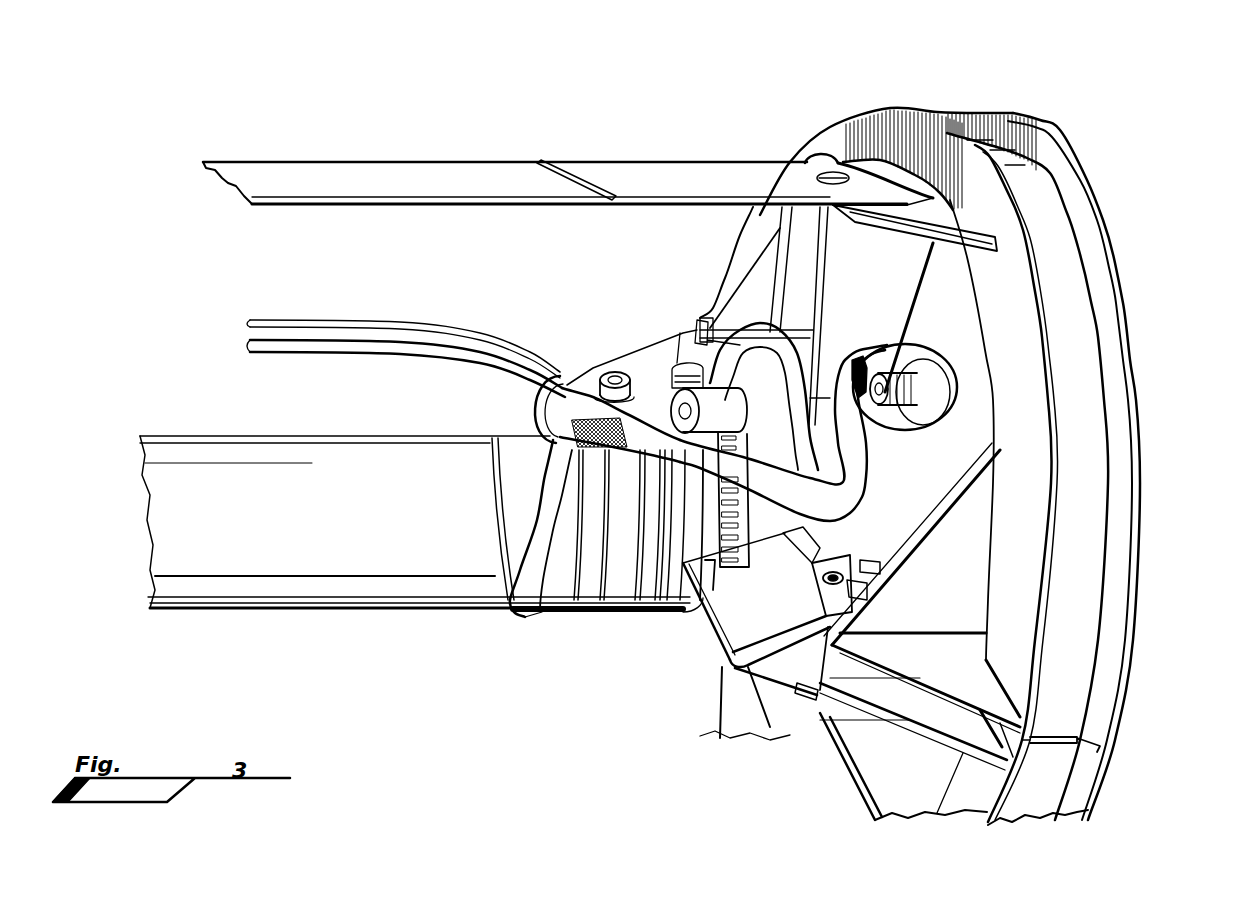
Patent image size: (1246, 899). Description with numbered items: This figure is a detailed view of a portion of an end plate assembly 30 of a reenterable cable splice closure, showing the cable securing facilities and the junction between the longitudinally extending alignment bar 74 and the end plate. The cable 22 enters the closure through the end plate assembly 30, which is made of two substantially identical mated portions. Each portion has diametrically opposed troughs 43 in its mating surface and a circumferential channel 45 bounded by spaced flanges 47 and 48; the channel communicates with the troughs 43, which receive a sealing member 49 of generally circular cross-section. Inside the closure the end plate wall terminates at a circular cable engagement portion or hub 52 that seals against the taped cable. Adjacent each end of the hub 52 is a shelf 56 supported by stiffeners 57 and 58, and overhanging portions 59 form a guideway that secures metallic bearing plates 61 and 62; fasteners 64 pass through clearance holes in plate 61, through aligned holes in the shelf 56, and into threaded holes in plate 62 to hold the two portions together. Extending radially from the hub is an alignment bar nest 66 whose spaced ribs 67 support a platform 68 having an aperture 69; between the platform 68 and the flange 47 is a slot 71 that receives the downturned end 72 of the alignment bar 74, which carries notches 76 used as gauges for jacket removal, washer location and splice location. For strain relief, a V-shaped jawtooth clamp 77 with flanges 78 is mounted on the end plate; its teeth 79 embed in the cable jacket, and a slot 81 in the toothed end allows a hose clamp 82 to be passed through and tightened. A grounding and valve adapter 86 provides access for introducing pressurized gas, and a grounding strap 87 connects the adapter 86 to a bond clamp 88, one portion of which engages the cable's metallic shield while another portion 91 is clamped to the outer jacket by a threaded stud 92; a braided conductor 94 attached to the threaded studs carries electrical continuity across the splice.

The cable 22 is at (228, 452).
The end plate assembly 30 is at (1127, 300).
The trough 43 is at (1053, 737).
The circumferential channel 45 is at (1078, 390).
The flange 47 is at (1058, 471).
The flange 48 is at (1141, 424).
The sealing member 49 is at (1042, 743).
The cable engagement portion (hub) 52 is at (990, 488).
The shelf 56 is at (862, 634).
The stiffener 57 is at (932, 668).
The stiffener 58 is at (946, 550).
The guideway portion 59 is at (840, 556).
The metallic bearing plate 61 is at (820, 582).
The metallic bearing plate 62 is at (797, 691).
The fastener 64 is at (881, 566).
The alignment bar nest 66 is at (997, 208).
The rib 67 is at (856, 321).
The platform 68 is at (940, 226).
The aperture 69 is at (800, 174).
The slot 71 is at (900, 214).
The downturned end 72 is at (932, 206).
The alignment bar 74 is at (428, 176).
The notch 76 is at (572, 186).
The V-shaped jawtooth clamp 77 is at (645, 372).
The flange 78 is at (733, 594).
The teeth 79 is at (687, 537).
The slot 81 is at (677, 548).
The hose clamp 82 is at (710, 488).
The grounding and valve adapter 86 is at (957, 364).
The grounding strap 87 is at (853, 448).
The bond clamp 88 is at (535, 416).
The portion of bond clamp 91 is at (580, 407).
The threaded stud 92 is at (617, 372).
The braided conductor 94 is at (455, 326).